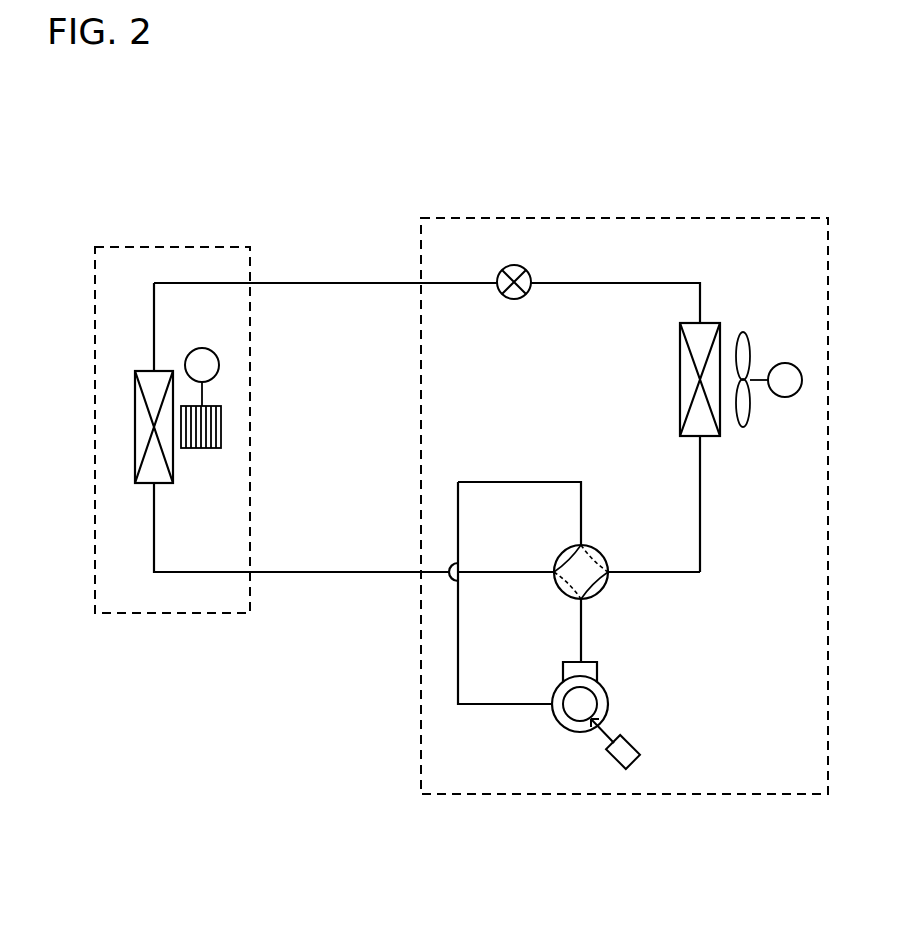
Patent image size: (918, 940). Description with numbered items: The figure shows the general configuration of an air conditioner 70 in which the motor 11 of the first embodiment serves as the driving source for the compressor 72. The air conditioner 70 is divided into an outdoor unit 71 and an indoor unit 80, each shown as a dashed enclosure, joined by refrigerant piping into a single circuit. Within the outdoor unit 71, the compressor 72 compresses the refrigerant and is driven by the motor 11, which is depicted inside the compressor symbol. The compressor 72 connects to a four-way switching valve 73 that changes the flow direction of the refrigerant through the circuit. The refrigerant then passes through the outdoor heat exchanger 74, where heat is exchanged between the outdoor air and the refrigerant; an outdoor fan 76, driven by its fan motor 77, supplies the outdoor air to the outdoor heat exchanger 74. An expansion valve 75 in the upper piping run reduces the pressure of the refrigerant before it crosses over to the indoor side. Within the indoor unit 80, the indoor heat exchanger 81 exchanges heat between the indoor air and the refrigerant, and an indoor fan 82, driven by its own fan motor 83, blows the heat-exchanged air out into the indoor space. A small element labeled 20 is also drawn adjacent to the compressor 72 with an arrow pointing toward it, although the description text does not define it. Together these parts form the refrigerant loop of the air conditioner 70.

The air conditioner 70 is at (461, 146).
The outdoor unit 71 is at (675, 218).
The indoor unit 80 is at (176, 247).
The indoor heat exchanger 81 is at (148, 371).
The indoor fan 82 is at (196, 450).
The fan motor 83 is at (205, 349).
The expansion valve 75 is at (514, 300).
The outdoor heat exchanger 74 is at (683, 378).
The outdoor fan 76 is at (744, 425).
The fan motor 77 is at (782, 363).
The four-way switching valve 73 is at (600, 590).
The compressor 72 is at (603, 702).
The motor 11 is at (599, 692).
The sensor 20 is at (630, 755).